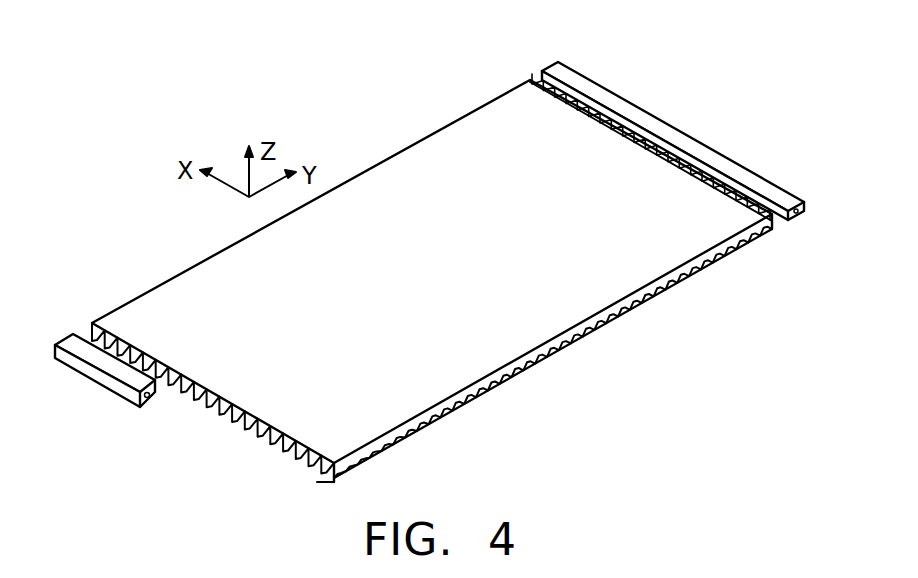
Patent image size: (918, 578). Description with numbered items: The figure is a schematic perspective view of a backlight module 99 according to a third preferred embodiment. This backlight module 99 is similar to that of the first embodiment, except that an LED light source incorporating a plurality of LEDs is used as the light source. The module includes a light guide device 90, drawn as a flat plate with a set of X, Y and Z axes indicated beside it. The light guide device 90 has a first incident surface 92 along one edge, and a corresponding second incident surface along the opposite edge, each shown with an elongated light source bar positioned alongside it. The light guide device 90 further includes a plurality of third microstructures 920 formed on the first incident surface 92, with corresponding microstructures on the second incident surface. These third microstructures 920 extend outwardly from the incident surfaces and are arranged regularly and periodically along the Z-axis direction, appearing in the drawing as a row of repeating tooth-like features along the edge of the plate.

The backlight module 99 is at (378, 53).
The light guide device 90 is at (420, 129).
The first incident surface 92 is at (96, 322).
The third microstructures 920 is at (238, 432).